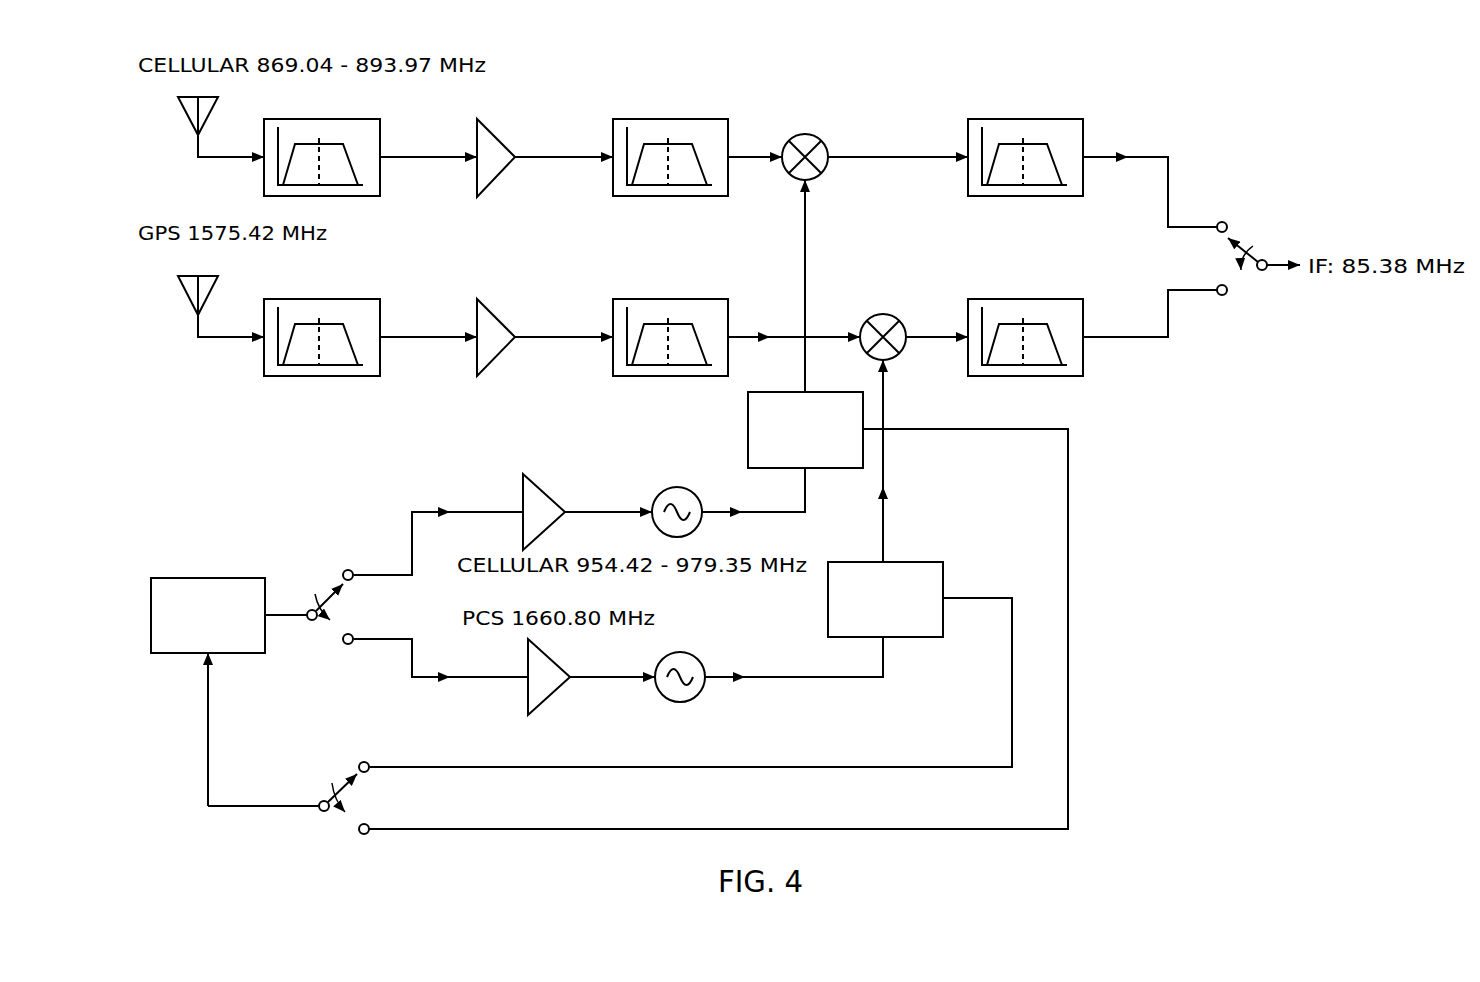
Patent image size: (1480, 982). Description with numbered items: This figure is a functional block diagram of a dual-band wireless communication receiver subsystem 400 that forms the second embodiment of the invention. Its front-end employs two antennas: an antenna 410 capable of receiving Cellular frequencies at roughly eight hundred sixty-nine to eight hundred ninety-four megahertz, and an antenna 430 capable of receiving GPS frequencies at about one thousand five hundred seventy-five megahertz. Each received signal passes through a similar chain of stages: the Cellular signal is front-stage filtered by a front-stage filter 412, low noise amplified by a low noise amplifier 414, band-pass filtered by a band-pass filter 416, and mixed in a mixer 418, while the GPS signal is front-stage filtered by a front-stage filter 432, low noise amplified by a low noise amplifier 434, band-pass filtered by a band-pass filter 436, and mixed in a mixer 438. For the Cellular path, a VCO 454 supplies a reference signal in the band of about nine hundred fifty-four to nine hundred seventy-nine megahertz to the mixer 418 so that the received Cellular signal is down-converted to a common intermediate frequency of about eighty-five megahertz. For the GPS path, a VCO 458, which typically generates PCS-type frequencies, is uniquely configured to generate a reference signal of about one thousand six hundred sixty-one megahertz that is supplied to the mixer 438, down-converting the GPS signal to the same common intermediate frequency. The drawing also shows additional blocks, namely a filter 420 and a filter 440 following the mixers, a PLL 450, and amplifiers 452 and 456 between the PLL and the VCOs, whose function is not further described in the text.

The receiver subsystem 400 is at (1298, 691).
The antenna 410 is at (187, 118).
The front-stage filter 412 is at (328, 119).
The low noise amplifier 414 is at (495, 132).
The band-pass filter 416 is at (682, 119).
The mixer 418 is at (806, 134).
The cellular IF filter 420 is at (1048, 119).
The antenna 430 is at (187, 297).
The front-stage filter 432 is at (328, 299).
The low noise amplifier 434 is at (495, 312).
The band-pass filter 436 is at (682, 299).
The mixer 438 is at (884, 314).
The GPS IF filter 440 is at (1048, 299).
The phase locked loop 450 is at (218, 578).
The cellular LO amplifier 452 is at (540, 486).
The VCO 454 is at (676, 487).
The PCS LO amplifier 456 is at (540, 710).
The VCO 458 is at (680, 702).